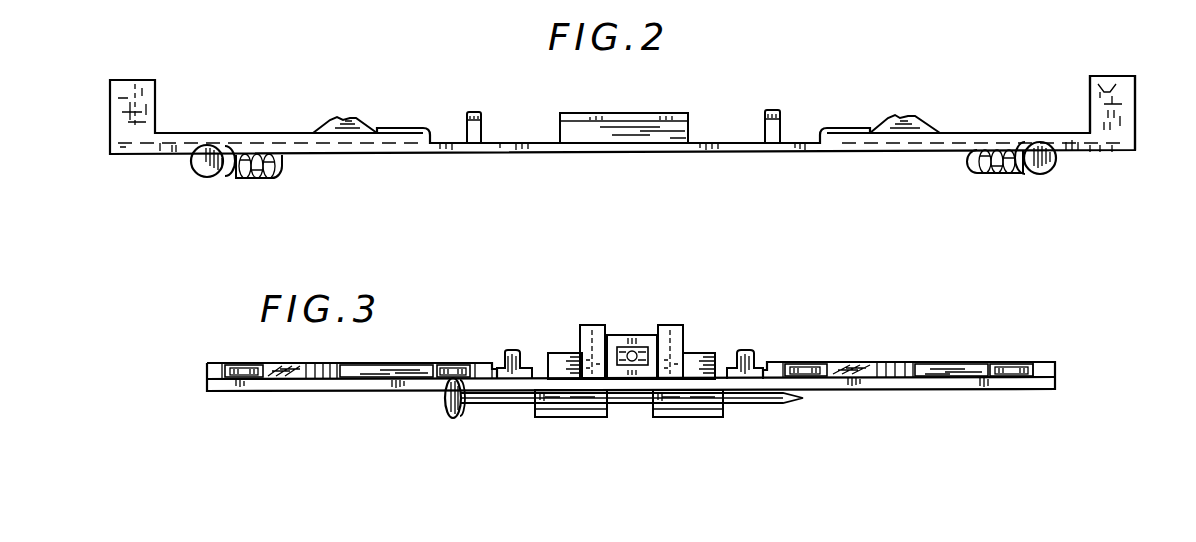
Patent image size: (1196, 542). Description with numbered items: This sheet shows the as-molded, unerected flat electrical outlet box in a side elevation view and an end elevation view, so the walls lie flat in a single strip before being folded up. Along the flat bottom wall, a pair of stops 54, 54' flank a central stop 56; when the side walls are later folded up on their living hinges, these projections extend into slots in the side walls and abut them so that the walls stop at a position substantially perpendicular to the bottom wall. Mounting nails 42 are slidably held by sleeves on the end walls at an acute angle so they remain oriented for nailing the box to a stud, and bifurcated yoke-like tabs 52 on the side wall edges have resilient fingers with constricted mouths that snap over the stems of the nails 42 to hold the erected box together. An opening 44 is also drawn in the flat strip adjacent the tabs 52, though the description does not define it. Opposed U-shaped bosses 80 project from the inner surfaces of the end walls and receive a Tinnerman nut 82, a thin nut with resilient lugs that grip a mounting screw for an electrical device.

In FIG. 3, the mounting nail 42 is at (482, 406).
In FIG. 3, the slot 44 is at (390, 372).
In FIG. 3, the bifurcated yoke-like tab 52 is at (322, 382).
In FIG. 2, the stop 54 is at (462, 106).
In FIG. 3, the stop 54 is at (505, 338).
In FIG. 2, the stop 54' is at (781, 106).
In FIG. 3, the stop 54' is at (770, 344).
In FIG. 2, the stop 56 is at (683, 113).
In FIG. 2, the U-shaped boss 80 is at (1135, 90).
In FIG. 3, the U-shaped boss 80 is at (683, 327).
In FIG. 3, the Tinnerman nut 82 is at (633, 340).